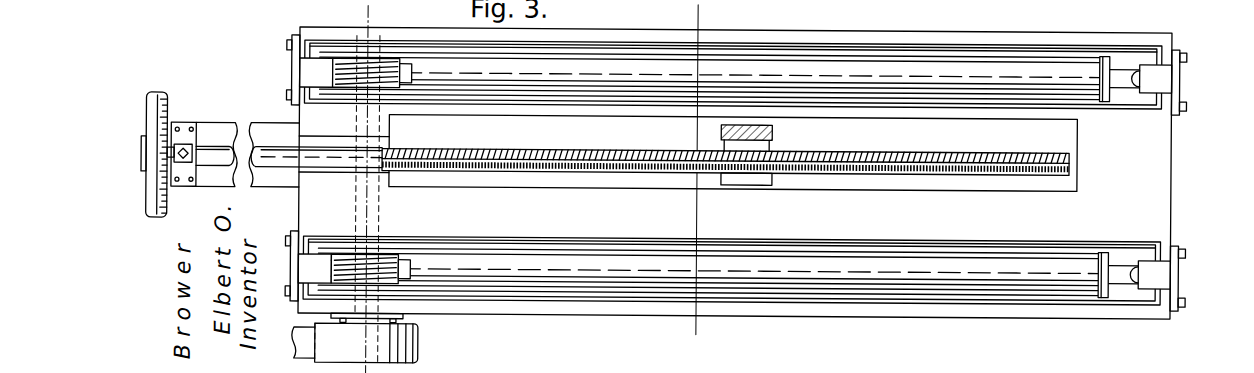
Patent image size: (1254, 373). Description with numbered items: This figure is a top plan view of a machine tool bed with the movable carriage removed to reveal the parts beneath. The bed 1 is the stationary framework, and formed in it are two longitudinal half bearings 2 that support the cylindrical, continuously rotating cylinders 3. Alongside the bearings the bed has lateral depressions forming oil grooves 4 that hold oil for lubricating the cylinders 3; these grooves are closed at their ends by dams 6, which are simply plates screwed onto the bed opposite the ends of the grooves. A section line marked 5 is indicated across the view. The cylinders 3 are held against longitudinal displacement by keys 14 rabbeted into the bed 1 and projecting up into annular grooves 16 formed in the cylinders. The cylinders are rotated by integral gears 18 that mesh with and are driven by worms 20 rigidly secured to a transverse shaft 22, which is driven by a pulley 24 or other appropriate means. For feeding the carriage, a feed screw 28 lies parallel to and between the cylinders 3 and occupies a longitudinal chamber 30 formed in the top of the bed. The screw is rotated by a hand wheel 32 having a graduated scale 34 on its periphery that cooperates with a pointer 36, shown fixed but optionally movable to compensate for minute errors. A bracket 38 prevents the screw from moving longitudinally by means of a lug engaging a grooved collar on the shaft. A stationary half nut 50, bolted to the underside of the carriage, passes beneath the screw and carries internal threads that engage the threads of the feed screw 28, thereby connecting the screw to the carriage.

The bed 1 is at (900, 306).
The half bearings 2 is at (1162, 79).
The cylinders 3 is at (762, 68).
The oil grooves 4 is at (386, 12).
The section line 5 is at (712, 10).
The dams 6 is at (290, 66).
The keys 14 is at (1105, 92).
The annular grooves 16 is at (1106, 71).
The gears 18 is at (354, 66).
The worms 20 is at (400, 67).
The transverse shaft 22 is at (357, 207).
The pulley 24 is at (417, 366).
The feed screw 28 is at (989, 163).
The longitudinal chamber 30 is at (1068, 182).
The hand wheel 32 is at (168, 110).
The graduated scale 34 is at (157, 95).
The pointer 36 is at (175, 150).
The bracket 38 is at (262, 138).
The half nut 50 is at (762, 174).